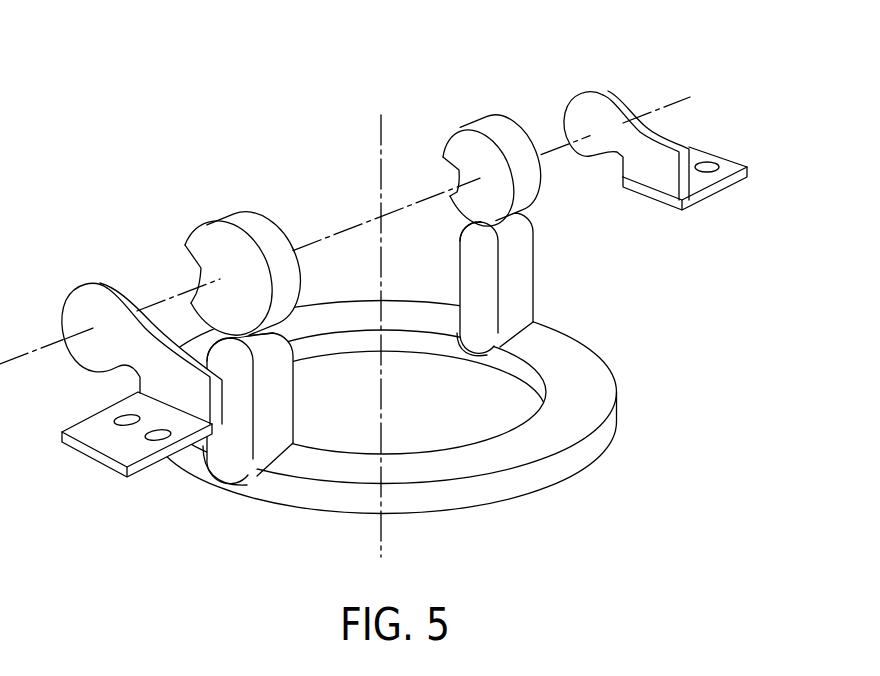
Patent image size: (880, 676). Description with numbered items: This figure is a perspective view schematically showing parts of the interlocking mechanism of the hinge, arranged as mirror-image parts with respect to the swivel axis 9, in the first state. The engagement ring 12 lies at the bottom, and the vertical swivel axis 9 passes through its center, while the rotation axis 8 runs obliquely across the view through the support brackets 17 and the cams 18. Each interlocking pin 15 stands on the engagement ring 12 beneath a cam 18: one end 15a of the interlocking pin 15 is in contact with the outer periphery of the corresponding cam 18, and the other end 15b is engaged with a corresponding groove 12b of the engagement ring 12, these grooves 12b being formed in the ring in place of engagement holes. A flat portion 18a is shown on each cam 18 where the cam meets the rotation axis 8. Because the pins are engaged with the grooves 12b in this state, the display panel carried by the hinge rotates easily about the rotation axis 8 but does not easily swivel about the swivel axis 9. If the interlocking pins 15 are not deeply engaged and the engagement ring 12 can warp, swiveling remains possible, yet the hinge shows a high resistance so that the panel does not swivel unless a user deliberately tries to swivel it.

The rotation axis 8 is at (663, 102).
The swivel axis 9 is at (378, 135).
The engagement ring 12 is at (607, 386).
The groove 12b is at (247, 482).
The interlocking pin 15 is at (288, 400).
The one end of interlocking pin 15a is at (295, 330).
The other end of interlocking pin 15b is at (227, 467).
The support bracket 17 is at (80, 426).
The cam 18 is at (229, 215).
The flat portion of roller 18a is at (187, 263).